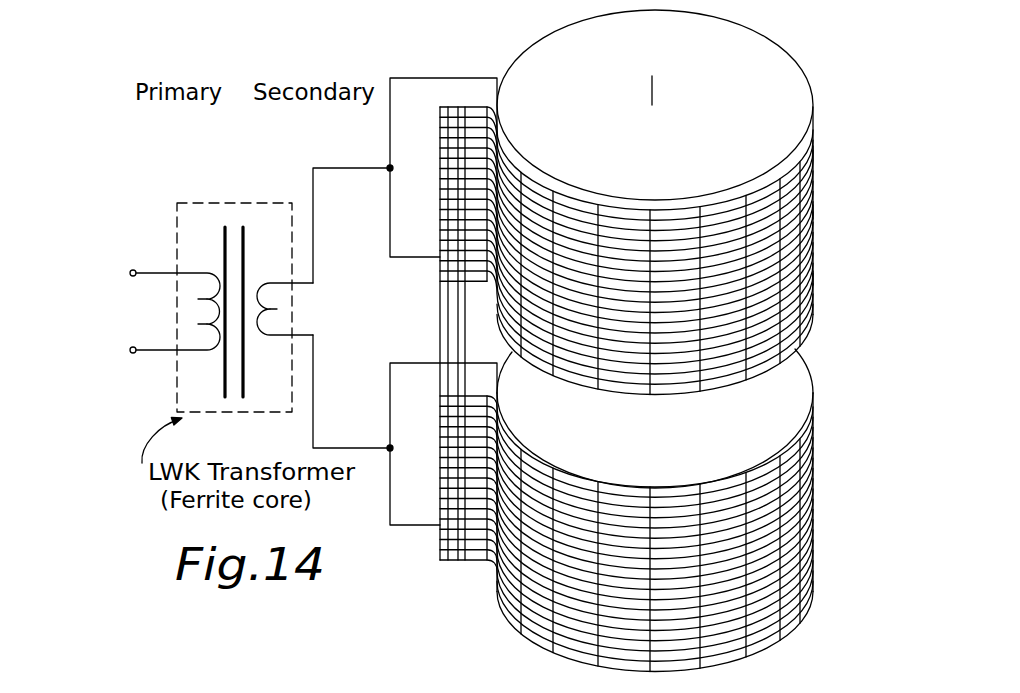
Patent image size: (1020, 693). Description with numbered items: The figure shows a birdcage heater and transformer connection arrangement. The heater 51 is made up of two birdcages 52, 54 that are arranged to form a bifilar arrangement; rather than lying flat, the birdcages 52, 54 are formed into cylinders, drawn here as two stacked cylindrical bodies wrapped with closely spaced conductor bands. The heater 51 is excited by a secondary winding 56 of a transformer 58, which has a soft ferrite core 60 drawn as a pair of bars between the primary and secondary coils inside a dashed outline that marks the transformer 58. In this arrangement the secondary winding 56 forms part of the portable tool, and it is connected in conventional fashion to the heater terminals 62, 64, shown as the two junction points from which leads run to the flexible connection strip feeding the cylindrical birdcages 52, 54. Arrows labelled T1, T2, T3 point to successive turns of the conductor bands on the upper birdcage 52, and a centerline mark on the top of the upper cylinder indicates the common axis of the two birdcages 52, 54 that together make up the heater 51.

The heater 51 is at (818, 346).
The birdcage 52 is at (809, 84).
The birdcage 54 is at (813, 391).
The secondary winding 56 is at (267, 283).
The transformer 58 is at (244, 181).
The soft ferrite core 60 is at (243, 233).
The terminal 62 is at (390, 168).
The terminal 64 is at (390, 448).
The winding turn T1 is at (822, 278).
The winding turn T2 is at (822, 212).
The winding turn T3 is at (822, 153).